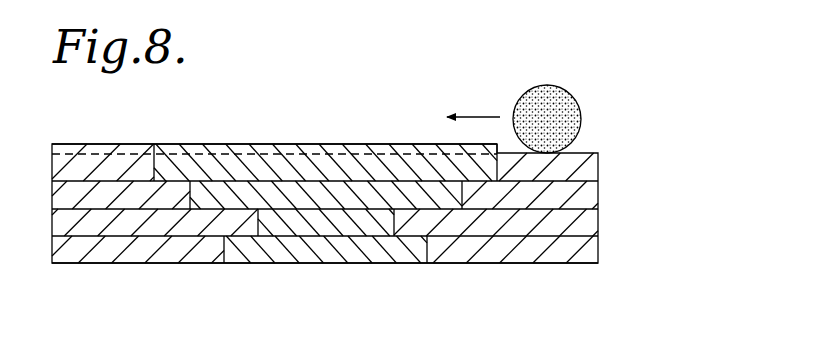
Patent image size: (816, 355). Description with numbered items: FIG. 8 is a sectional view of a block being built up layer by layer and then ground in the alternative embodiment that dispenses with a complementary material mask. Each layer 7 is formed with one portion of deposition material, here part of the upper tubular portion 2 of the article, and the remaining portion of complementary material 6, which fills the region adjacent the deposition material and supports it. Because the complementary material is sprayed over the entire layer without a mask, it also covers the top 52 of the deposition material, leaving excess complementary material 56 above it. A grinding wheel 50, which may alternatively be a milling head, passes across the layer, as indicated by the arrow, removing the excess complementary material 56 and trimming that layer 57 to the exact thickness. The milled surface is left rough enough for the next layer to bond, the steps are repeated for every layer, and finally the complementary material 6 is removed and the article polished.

The upper tubular portion 2 is at (346, 252).
The complementary material 6 is at (172, 272).
The layer 7 is at (573, 167).
The grinding wheel 50 is at (557, 107).
The top of deposition material 52 is at (190, 135).
The excess complementary material 56 is at (320, 152).
The layer being trimmed 57 is at (155, 180).